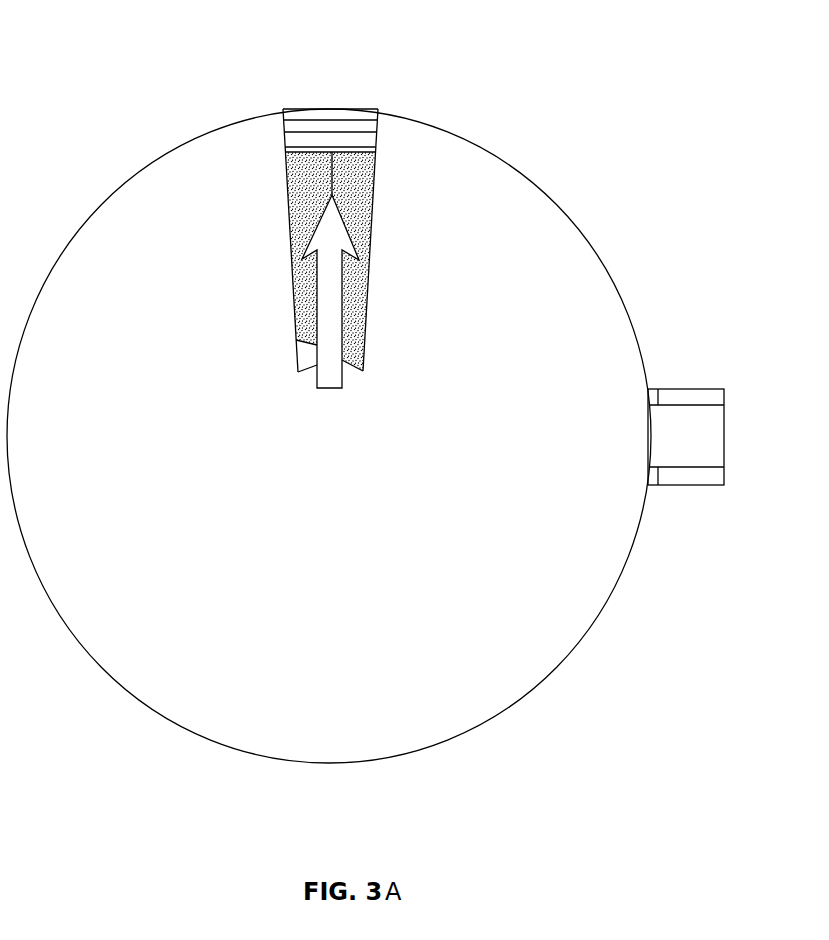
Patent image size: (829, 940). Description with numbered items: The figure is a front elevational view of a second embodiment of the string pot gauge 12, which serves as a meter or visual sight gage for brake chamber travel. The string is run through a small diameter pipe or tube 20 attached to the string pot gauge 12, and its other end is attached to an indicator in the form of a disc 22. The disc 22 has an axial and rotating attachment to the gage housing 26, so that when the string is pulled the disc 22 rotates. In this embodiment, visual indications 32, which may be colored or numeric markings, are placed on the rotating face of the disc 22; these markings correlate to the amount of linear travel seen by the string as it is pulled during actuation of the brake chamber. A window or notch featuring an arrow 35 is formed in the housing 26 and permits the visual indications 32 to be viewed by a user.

The string pot gauge 12 is at (104, 47).
The small diameter pipe or tube 20 is at (685, 398).
The disc 22 is at (334, 120).
The gage housing 26 is at (536, 182).
The visual indications 32 is at (354, 216).
The arrow 35 is at (330, 295).